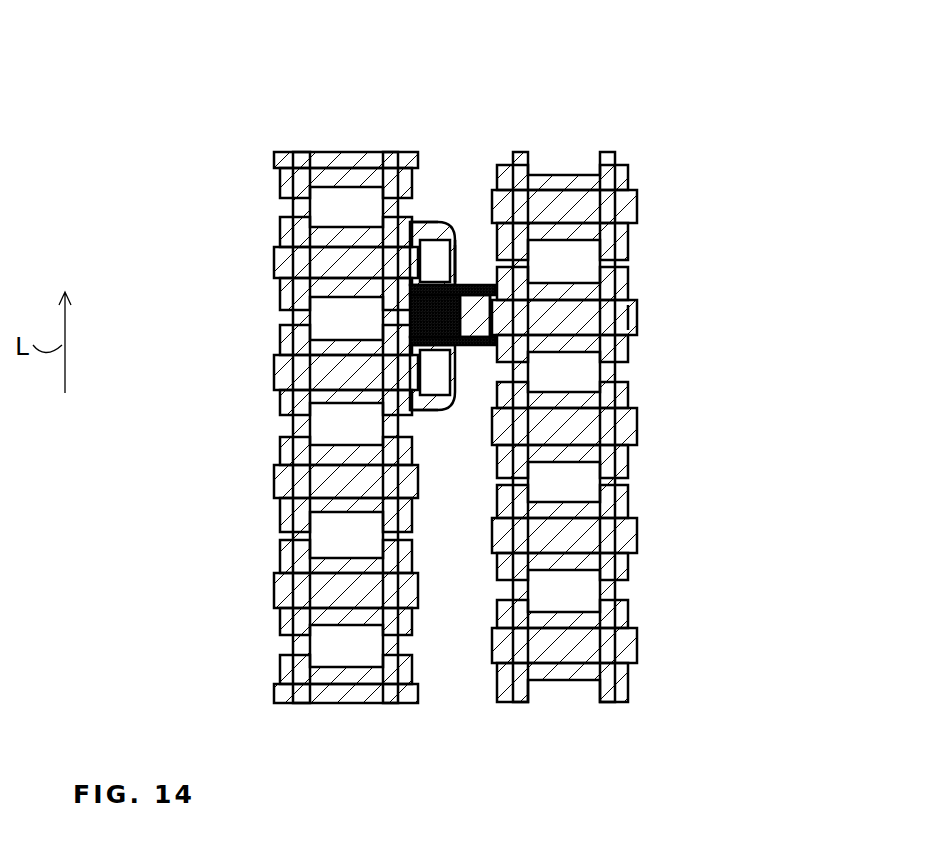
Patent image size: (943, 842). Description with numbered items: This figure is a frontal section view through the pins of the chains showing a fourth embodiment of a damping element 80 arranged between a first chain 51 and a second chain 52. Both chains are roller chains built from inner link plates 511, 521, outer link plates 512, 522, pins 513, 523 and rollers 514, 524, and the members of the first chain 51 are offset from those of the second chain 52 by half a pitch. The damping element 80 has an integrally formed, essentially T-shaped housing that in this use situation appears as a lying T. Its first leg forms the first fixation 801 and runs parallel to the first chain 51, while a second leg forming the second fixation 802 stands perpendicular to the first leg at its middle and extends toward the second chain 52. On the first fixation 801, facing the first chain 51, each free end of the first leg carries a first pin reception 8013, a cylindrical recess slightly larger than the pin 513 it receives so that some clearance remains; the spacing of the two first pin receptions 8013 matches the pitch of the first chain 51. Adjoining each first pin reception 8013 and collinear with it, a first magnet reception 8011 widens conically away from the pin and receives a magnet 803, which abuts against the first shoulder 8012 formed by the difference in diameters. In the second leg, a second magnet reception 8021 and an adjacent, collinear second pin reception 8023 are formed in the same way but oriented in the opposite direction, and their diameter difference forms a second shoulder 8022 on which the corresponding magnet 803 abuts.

The first chain 51 is at (343, 88).
The second chain 52 is at (572, 86).
The damping element 80 is at (462, 672).
The first fixation 801 is at (428, 226).
The first magnet reception 8011 is at (455, 282).
The first shoulder 8012 is at (418, 238).
The first pin reception 8013 is at (420, 410).
The second fixation 802 is at (498, 290).
The second magnet reception 8021 is at (420, 322).
The second shoulder 8022 is at (490, 300).
The second pin reception 8023 is at (490, 345).
The magnet 803 is at (456, 240).
The inner link plates 511 is at (283, 448).
The outer link plates 512 is at (283, 518).
The pins 513 is at (290, 592).
The rollers 514 is at (295, 640).
The inner link plates 521 is at (628, 390).
The outer link plates 522 is at (626, 474).
The pins 523 is at (630, 645).
The rollers 524 is at (626, 690).